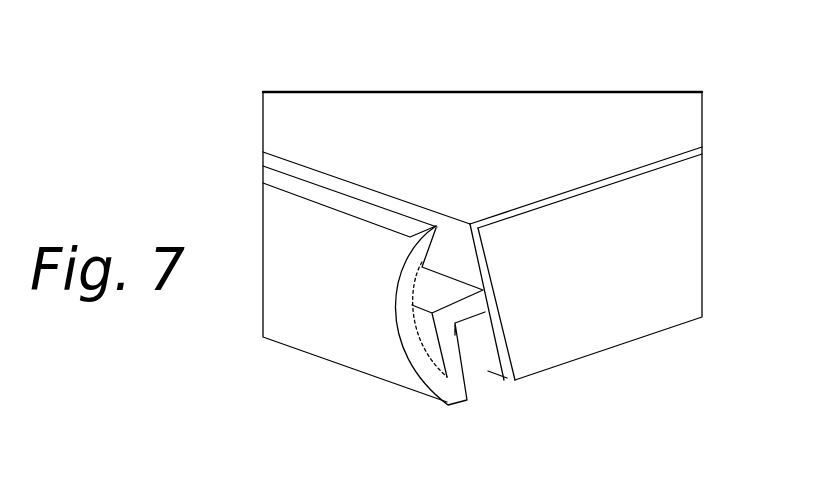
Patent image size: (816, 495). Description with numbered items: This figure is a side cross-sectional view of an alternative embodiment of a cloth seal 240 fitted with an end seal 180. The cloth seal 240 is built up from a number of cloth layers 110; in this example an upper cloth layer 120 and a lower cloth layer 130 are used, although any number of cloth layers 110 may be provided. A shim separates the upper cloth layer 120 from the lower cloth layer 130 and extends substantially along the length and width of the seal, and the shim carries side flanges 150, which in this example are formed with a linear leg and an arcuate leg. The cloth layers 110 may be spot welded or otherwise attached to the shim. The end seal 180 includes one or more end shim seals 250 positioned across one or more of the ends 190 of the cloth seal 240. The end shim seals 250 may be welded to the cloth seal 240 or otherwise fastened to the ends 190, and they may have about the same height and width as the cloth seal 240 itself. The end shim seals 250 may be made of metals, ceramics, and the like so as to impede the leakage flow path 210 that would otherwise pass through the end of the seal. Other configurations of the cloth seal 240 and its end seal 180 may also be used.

The cloth layers 110 is at (675, 82).
The upper cloth layer 120 is at (600, 122).
The lower cloth layer 130 is at (481, 376).
The side flanges 150 is at (339, 376).
The end seal 180 is at (547, 383).
The ends 190 is at (670, 153).
The leakage flow path 210 is at (700, 358).
The cloth seal 240 is at (333, 60).
The end shim seals 250 is at (614, 327).